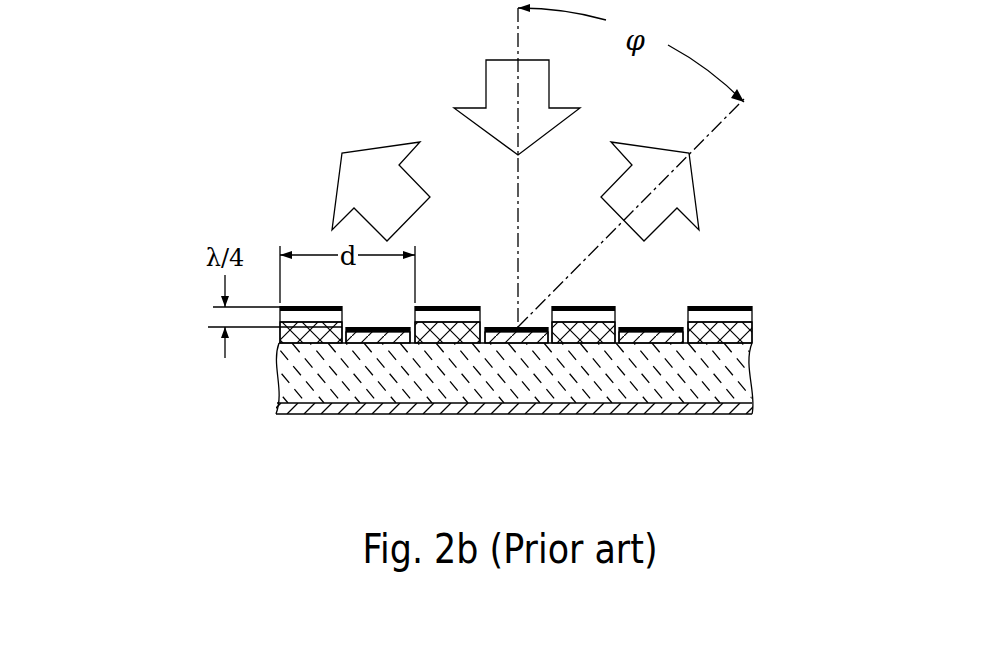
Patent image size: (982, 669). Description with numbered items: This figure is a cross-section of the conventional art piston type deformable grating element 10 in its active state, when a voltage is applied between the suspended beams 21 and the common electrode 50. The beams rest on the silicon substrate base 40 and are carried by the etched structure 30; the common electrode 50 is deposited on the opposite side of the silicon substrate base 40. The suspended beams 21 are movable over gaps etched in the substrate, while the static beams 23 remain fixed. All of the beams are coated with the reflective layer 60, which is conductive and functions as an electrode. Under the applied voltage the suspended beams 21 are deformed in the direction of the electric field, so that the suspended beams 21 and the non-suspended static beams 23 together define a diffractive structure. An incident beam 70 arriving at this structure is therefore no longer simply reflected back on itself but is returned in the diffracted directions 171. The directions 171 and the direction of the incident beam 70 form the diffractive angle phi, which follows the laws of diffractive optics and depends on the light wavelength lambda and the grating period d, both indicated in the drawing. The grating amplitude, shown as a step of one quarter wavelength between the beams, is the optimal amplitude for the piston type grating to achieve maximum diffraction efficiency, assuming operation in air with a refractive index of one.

The piston type deformable grating element 10 is at (253, 382).
The suspended beams 21 is at (350, 338).
The static beams 23 is at (597, 332).
The etched structure 30 is at (723, 334).
The silicon substrate base 40 is at (754, 377).
The common electrode 50 is at (753, 412).
The reflective layer 60 is at (722, 308).
The incident beam 70 is at (495, 87).
The diffracted directions 171 is at (357, 182).